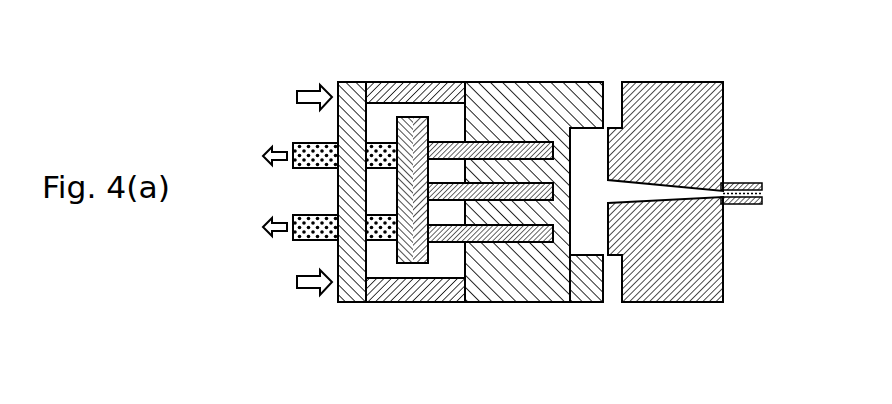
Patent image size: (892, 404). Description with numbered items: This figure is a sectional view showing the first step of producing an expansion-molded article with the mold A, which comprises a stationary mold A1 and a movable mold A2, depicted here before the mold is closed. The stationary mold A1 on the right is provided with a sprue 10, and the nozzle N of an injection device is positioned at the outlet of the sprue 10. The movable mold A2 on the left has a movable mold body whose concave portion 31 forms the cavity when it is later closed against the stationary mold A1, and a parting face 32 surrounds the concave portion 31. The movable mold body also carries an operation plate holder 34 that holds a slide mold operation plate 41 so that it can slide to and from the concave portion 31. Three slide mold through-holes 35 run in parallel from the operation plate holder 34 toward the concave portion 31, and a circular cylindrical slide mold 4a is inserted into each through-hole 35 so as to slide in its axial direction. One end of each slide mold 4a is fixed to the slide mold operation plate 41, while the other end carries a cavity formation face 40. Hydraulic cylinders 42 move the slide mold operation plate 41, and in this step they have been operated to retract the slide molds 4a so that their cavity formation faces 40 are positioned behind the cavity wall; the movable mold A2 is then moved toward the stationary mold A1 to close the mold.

The mold A is at (512, 80).
The stationary mold A1 is at (703, 82).
The movable mold A2 is at (450, 302).
The sprue 10 is at (661, 198).
The concave portion 31 is at (603, 258).
The parting face 32 is at (606, 83).
The operation plate holder 34 is at (380, 113).
The slide mold through-hole 35 is at (558, 142).
The cavity formation face 40 is at (553, 148).
The slide mold 4a is at (475, 160).
The slide mold operation plate 41 is at (406, 264).
The hydraulic cylinder 42 is at (295, 242).
The nozzle N is at (745, 206).